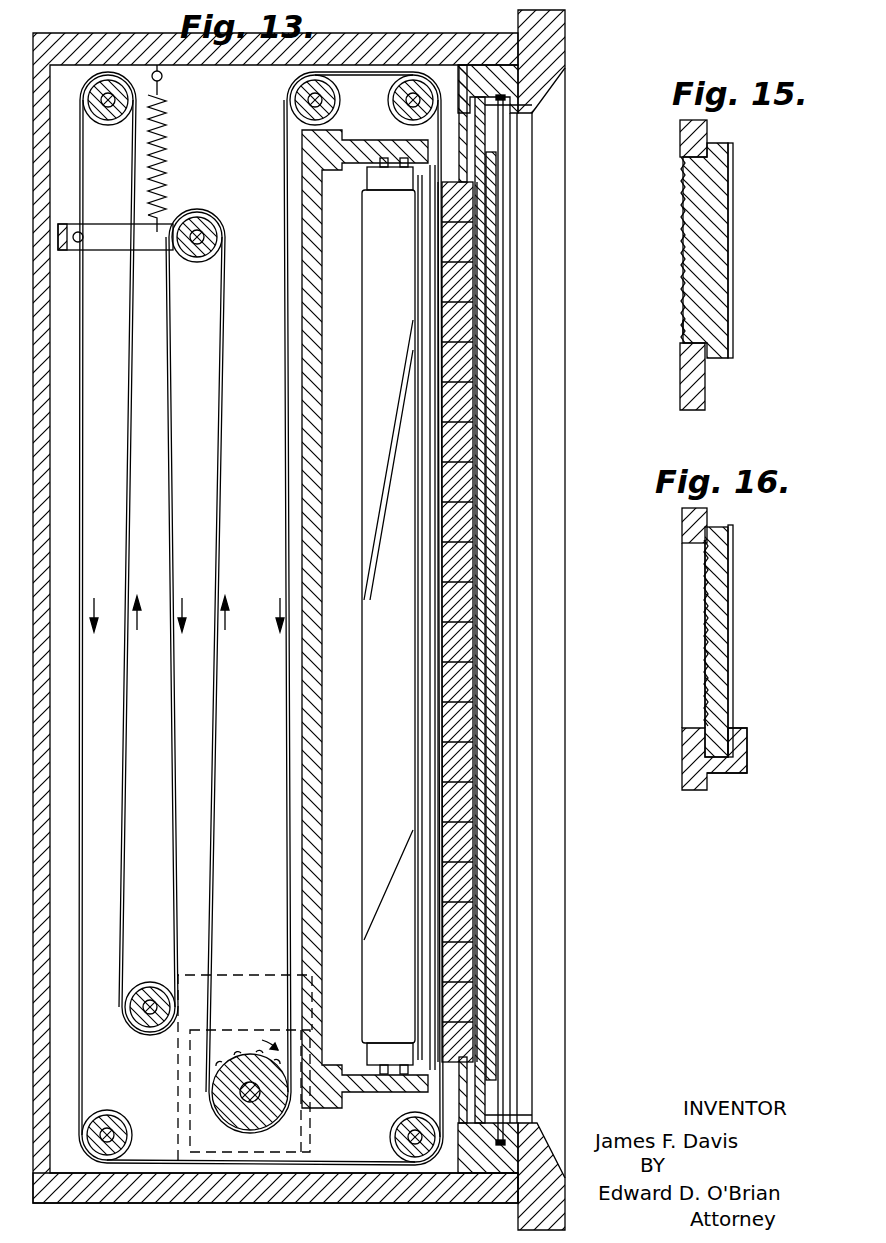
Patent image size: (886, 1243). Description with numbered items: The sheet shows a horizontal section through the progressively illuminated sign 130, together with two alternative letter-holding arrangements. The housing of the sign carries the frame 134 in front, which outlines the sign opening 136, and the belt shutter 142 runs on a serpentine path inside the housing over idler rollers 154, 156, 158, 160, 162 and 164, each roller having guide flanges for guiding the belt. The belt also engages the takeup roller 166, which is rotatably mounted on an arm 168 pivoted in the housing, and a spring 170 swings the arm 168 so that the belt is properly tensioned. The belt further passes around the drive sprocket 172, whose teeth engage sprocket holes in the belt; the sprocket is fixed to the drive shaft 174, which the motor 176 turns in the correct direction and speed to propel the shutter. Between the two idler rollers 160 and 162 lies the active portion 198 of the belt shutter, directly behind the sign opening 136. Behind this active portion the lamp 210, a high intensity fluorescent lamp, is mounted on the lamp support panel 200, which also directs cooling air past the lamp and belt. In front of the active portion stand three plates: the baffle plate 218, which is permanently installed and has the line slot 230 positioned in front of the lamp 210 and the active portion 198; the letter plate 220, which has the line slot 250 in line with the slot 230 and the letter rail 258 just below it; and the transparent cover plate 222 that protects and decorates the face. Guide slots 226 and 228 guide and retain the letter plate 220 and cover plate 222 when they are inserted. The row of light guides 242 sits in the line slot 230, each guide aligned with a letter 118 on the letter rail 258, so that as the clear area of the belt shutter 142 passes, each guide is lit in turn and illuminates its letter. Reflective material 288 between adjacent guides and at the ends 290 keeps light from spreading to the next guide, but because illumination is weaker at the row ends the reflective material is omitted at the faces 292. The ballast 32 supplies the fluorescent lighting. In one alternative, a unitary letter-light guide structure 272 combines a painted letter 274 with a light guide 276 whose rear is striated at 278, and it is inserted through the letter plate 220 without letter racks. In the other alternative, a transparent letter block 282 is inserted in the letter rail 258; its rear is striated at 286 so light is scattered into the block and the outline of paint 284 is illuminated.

In FIG. 13, the ballast 32 is at (258, 1197).
In FIG. 13, the letter 118 is at (500, 482).
In FIG. 13, the progressively illuminated sign 130 is at (594, 71).
In FIG. 13, the frame 134 is at (552, 36).
In FIG. 13, the sign opening 136 is at (522, 126).
In FIG. 13, the belt shutter 142 is at (218, 698).
In FIG. 13, the idler roller 154 is at (146, 1026).
In FIG. 13, the idler roller 156 is at (112, 92).
In FIG. 13, the pulley 158 is at (122, 1098).
In FIG. 13, the idler roller 160 is at (400, 1141).
In FIG. 13, the idler roller 162 is at (402, 110).
In FIG. 13, the idler roller 164 is at (292, 100).
In FIG. 13, the takeup roller 166 is at (213, 224).
In FIG. 13, the arm 168 is at (145, 242).
In FIG. 13, the spring 170 is at (166, 120).
In FIG. 13, the drive sprocket 172 is at (250, 1066).
In FIG. 13, the drive shaft 174 is at (248, 1106).
In FIG. 13, the motor 176 is at (180, 1068).
In FIG. 13, the active portion of belt shutter 198 is at (443, 770).
In FIG. 13, the lamp support panel 200 is at (304, 776).
In FIG. 13, the lamp 210 is at (362, 410).
In FIG. 13, the baffle plate 218 is at (482, 1097).
In FIG. 13, the letter plate 220 is at (500, 1085).
In FIG. 15, the letter plate 220 is at (690, 388).
In FIG. 16, the letter plate 220 is at (690, 764).
In FIG. 13, the transparent cover plate 222 is at (507, 1000).
In FIG. 13, the guide slot 226 is at (512, 106).
In FIG. 13, the guide slot 228 is at (503, 97).
In FIG. 13, the line slot 230 is at (464, 182).
In FIG. 16, the line slot 230 is at (690, 548).
In FIG. 13, the row of light guides 242 is at (443, 836).
In FIG. 13, the line slot 250 is at (492, 286).
In FIG. 13, the letter rail 258 is at (517, 905).
In FIG. 16, the letter rail 258 is at (740, 766).
In FIG. 15, the unitary letter-light guide structure 272 is at (734, 234).
In FIG. 15, the letter 274 is at (712, 276).
In FIG. 15, the light guide 276 is at (693, 303).
In FIG. 15, the striations 278 is at (681, 328).
In FIG. 16, the letter block 282 is at (712, 628).
In FIG. 16, the outline of paint 284 is at (735, 580).
In FIG. 16, the striations 286 is at (707, 632).
In FIG. 13, the reflective material 288 is at (440, 522).
In FIG. 13, the ends 290 is at (432, 186).
In FIG. 13, the faces 292 is at (450, 226).